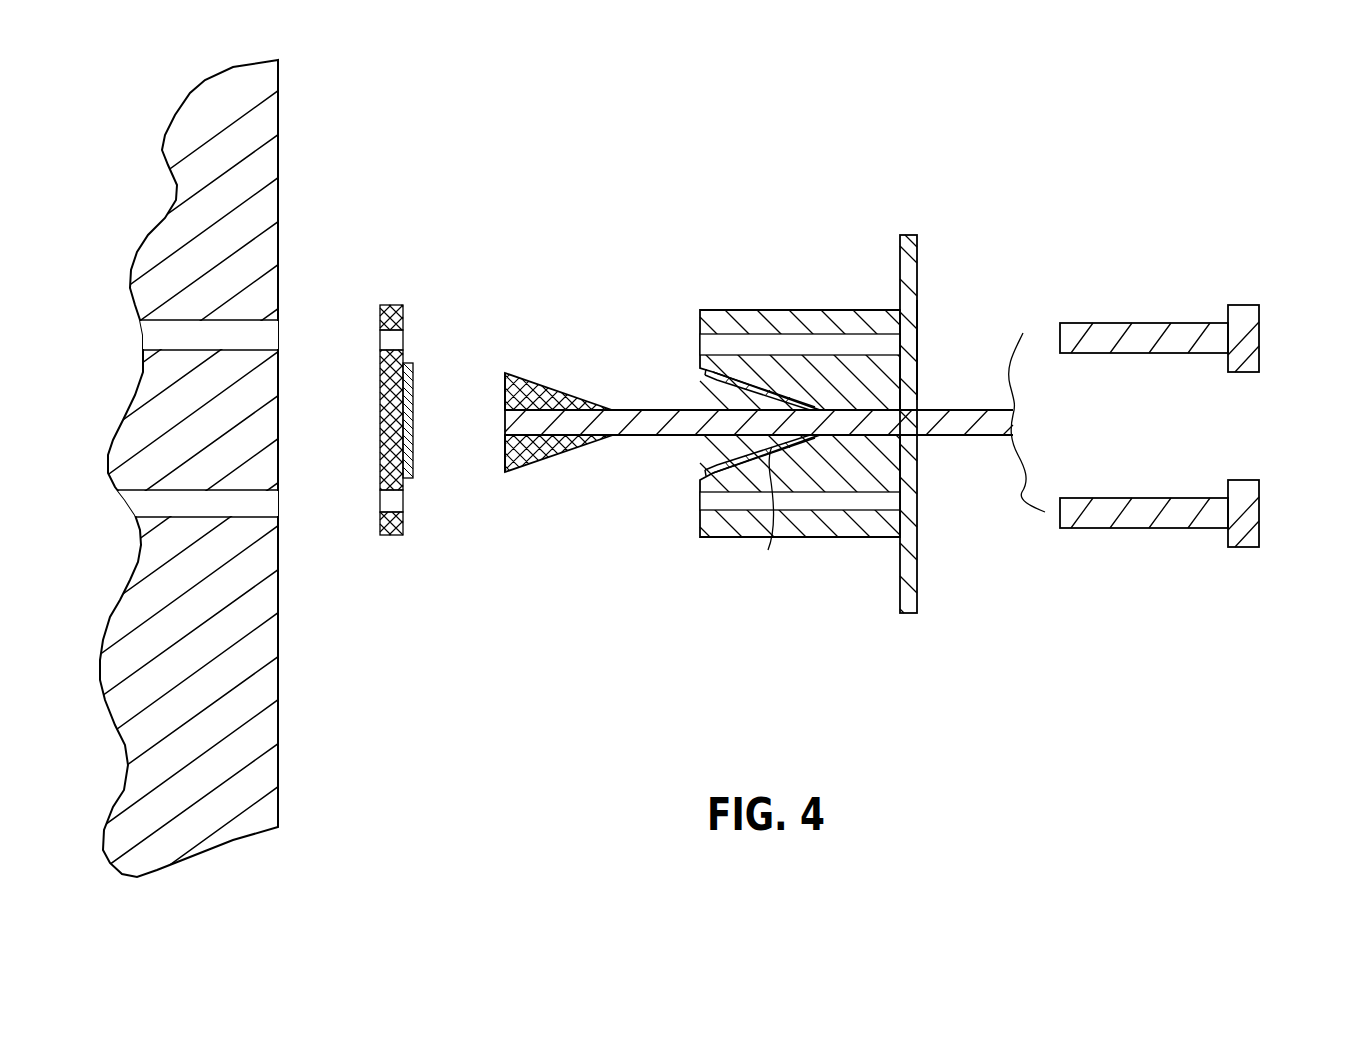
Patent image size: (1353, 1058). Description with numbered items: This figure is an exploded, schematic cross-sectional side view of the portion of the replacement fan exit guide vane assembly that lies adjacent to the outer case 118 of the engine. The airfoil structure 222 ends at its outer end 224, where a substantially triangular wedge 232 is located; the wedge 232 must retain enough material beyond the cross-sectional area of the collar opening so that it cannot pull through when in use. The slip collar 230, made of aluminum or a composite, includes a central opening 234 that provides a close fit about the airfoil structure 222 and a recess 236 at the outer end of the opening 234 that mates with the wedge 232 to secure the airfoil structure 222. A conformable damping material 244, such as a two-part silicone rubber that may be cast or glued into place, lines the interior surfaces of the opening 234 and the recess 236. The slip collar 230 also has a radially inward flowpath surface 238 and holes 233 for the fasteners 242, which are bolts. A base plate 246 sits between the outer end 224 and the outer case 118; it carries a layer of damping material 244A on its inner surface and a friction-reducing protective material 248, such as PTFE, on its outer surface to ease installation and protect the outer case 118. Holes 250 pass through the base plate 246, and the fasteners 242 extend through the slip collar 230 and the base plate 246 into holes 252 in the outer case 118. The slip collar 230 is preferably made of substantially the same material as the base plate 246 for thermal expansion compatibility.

The outer case 118 is at (268, 162).
The airfoil structure 222 is at (987, 412).
The outer end 224 is at (505, 427).
The slip collar 230 is at (802, 309).
The wedge 232 is at (537, 384).
The holes 233 is at (700, 345).
The central opening 234 is at (918, 405).
The recess 236 is at (766, 518).
The radially inward flowpath surface 238 is at (918, 586).
The fasteners 242 is at (1260, 338).
The damping material 244 is at (707, 390).
The layer of damping material 244A is at (413, 383).
The base plate 246 is at (392, 307).
The protective material 248 is at (390, 536).
The holes 250 is at (380, 338).
The holes 252 is at (268, 332).